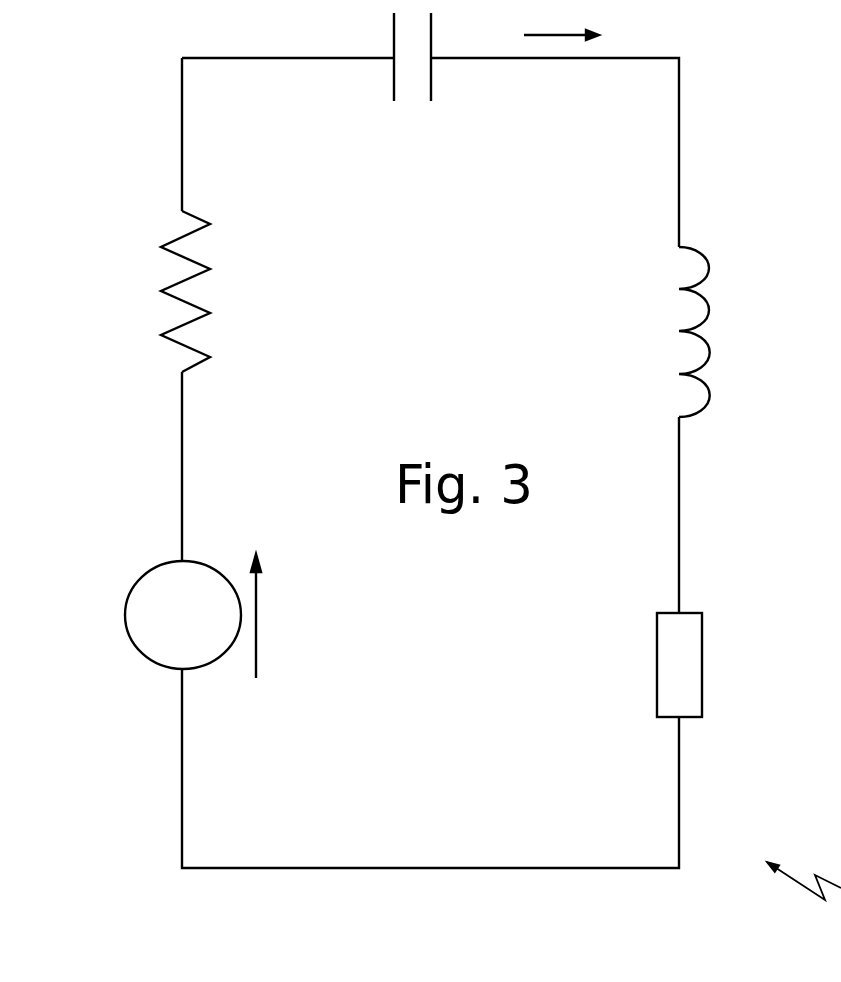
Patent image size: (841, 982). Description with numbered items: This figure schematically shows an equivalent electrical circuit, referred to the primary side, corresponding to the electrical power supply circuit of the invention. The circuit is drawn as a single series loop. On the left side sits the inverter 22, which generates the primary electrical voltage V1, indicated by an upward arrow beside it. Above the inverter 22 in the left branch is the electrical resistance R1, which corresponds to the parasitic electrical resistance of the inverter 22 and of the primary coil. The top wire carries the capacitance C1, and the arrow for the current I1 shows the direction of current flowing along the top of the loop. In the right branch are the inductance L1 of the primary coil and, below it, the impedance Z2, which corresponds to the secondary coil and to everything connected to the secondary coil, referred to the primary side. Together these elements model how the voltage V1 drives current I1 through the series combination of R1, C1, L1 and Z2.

The inverter 22 is at (183, 615).
The capacitance C1 is at (412, 76).
The primary electrical current I1 is at (561, 21).
The electrical resistance R1 is at (208, 291).
The inductance L1 is at (714, 332).
The impedance Z2 is at (699, 665).
The primary electrical voltage V1 is at (271, 616).